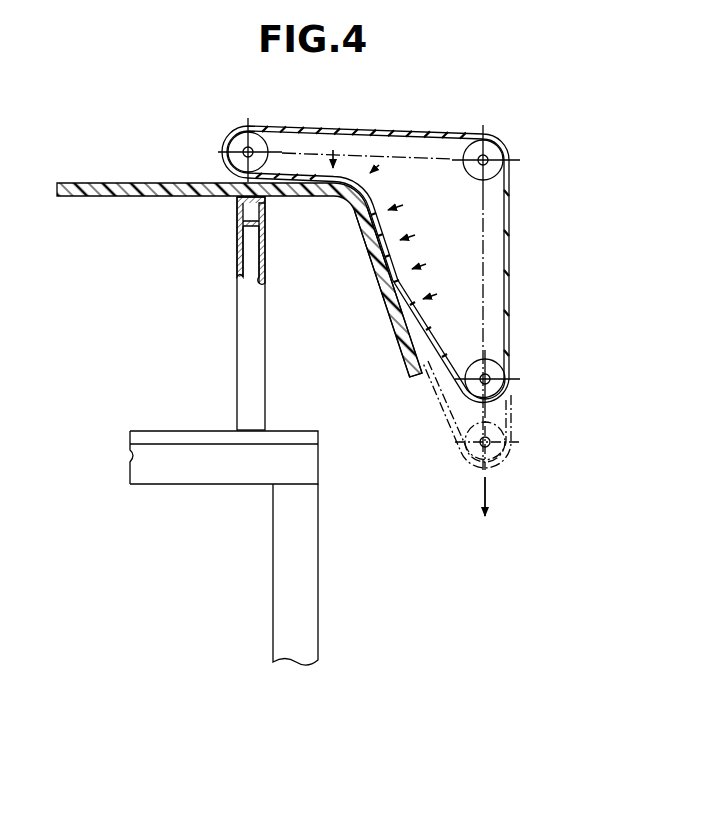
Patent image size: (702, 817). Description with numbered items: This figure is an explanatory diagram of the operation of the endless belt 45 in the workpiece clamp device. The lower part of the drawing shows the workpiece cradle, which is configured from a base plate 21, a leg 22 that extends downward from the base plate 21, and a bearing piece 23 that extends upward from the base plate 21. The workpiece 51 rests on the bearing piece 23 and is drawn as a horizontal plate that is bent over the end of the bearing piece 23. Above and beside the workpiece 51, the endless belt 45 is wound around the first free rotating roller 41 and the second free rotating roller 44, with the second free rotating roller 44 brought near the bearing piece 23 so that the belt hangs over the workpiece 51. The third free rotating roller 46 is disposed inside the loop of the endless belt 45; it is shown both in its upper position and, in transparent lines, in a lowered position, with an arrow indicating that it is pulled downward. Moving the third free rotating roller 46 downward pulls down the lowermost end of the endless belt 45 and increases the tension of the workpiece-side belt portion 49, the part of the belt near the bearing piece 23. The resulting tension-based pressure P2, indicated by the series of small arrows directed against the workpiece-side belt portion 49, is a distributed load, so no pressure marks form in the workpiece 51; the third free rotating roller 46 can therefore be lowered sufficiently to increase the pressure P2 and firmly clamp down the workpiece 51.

The base plate 21 is at (160, 430).
The leg 22 is at (318, 568).
The bearing piece 23 is at (237, 299).
The first free rotating roller 41 is at (495, 148).
The second free rotating roller 44 is at (261, 149).
The endless belt 45 is at (377, 131).
The third free rotating roller 46 is at (497, 373).
The workpiece-side belt portion 49 is at (396, 263).
The workpiece 51 is at (92, 183).
The tension-based pressure P2 is at (386, 224).